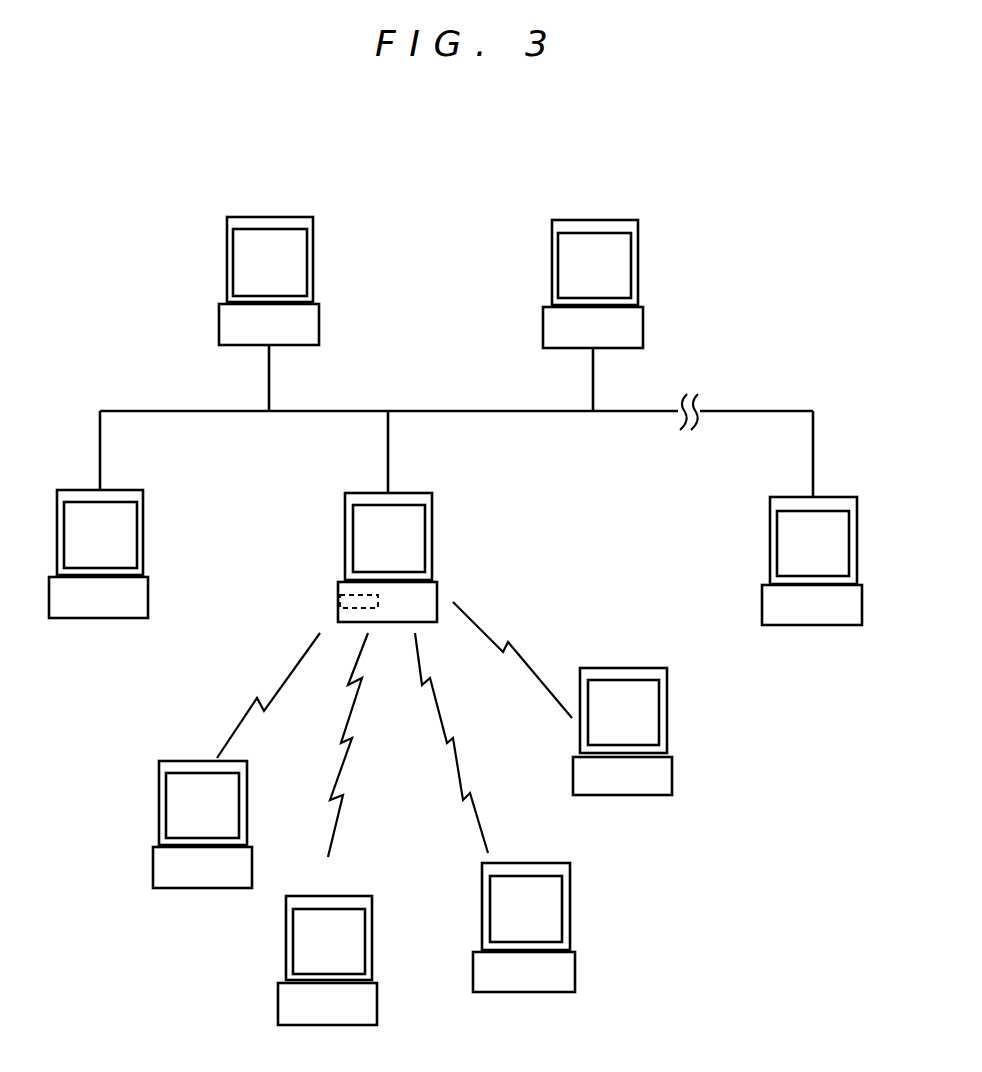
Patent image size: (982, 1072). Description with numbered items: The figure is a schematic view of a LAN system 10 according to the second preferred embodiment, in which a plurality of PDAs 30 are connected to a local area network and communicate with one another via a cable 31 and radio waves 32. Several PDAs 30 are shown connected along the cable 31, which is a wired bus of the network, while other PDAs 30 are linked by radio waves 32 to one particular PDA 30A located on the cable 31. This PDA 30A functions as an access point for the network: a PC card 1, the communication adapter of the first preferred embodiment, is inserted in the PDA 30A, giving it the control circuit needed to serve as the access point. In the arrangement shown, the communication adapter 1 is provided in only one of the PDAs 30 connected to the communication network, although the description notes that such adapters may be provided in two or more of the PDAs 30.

The LAN system 10 is at (150, 246).
The PDA 30 is at (313, 265).
The PDA functioning as access point 30A is at (432, 540).
The cable 31 is at (158, 409).
The radio waves 32 is at (287, 677).
The PC card 1 is at (339, 602).